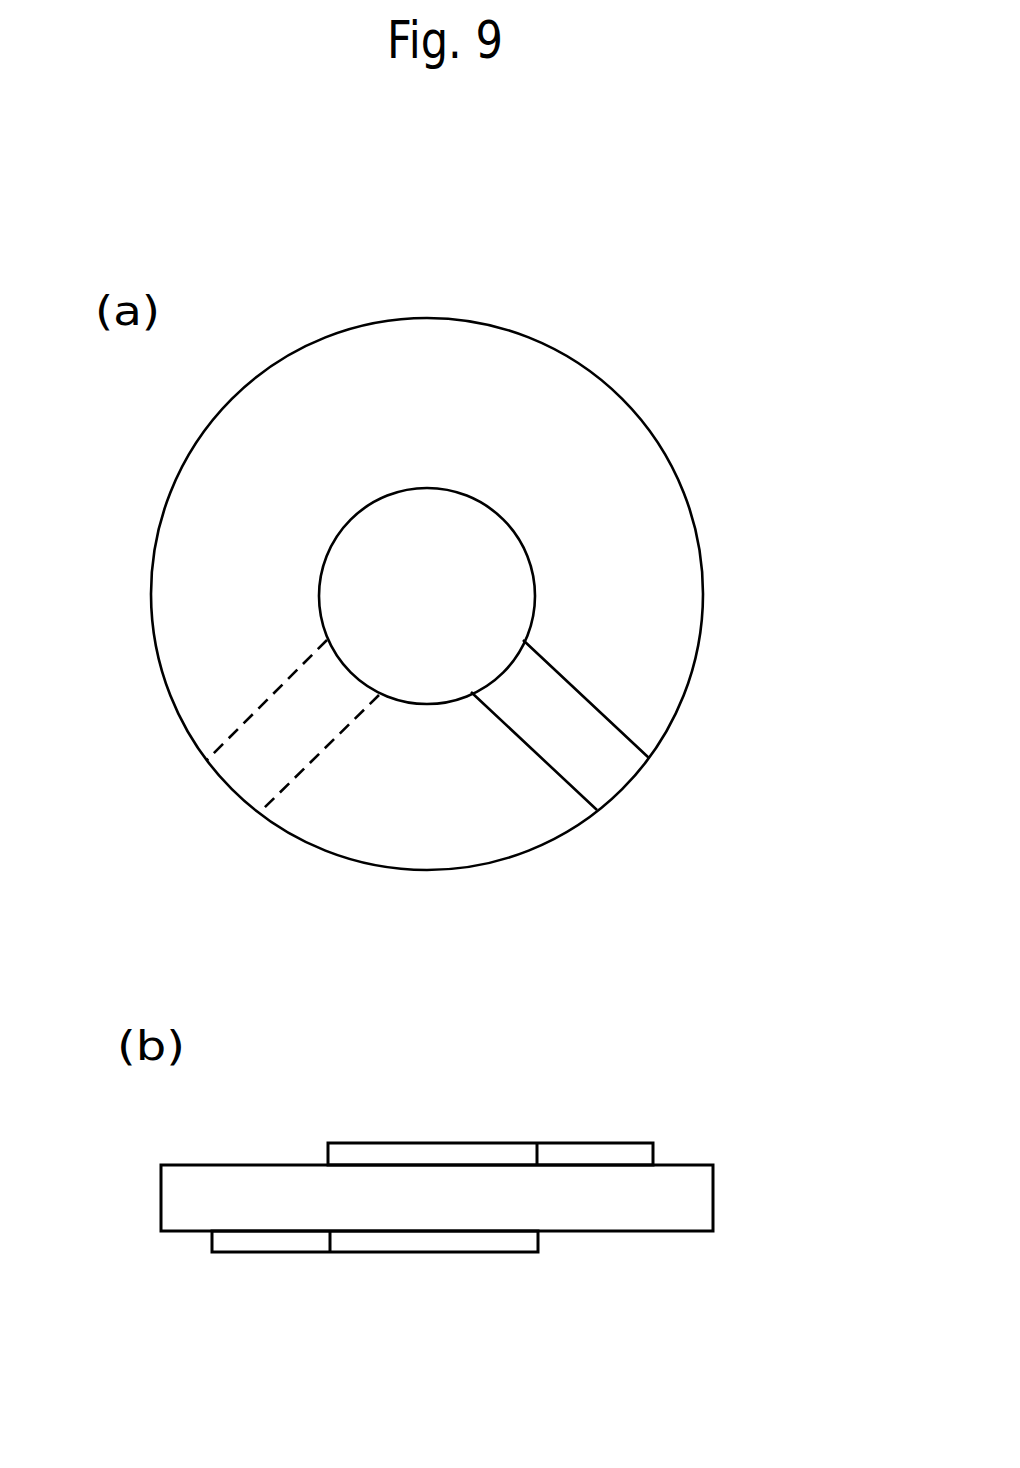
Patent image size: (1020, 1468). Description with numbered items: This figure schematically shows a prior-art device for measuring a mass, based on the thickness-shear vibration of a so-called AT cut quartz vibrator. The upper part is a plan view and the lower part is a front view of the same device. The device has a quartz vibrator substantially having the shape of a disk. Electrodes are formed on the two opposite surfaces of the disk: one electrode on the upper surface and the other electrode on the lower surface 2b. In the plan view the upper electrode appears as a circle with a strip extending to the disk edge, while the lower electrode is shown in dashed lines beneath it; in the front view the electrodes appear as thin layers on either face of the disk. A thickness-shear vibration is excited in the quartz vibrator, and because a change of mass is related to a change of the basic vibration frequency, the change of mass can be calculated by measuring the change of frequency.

The surface of the quartz vibrator 2b is at (683, 1232).